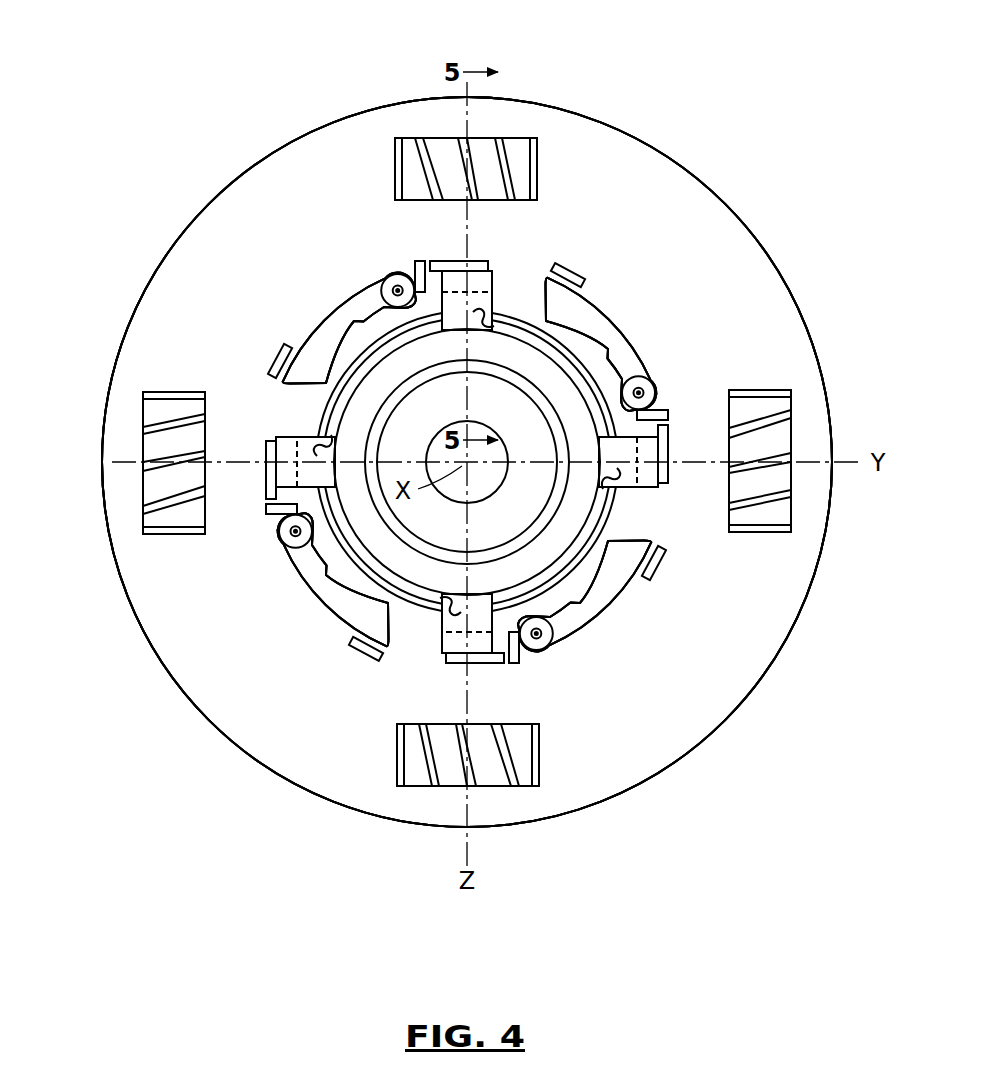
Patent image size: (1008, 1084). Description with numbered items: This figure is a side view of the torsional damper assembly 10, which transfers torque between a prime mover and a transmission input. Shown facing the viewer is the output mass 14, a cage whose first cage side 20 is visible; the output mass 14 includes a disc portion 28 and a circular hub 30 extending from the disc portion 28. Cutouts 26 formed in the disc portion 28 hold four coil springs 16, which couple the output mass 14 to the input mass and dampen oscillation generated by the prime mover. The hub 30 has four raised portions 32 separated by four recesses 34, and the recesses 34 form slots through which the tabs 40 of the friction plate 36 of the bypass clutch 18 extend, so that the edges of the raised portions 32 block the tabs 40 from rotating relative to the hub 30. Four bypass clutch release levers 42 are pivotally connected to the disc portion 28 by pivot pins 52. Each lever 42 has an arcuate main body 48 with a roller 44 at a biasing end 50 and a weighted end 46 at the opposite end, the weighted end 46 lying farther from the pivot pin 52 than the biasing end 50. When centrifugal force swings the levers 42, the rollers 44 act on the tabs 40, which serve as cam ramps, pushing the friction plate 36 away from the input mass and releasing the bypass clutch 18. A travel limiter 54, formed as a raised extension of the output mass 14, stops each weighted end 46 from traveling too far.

The torsional damper assembly 10 is at (700, 820).
The output mass 14 is at (176, 749).
The coil springs 16 is at (503, 165).
The bypass clutch 18 is at (485, 680).
The first cage side 20 is at (225, 665).
The cutouts 26 is at (541, 176).
The disc portion 28 is at (700, 697).
The hub 30 is at (410, 613).
The raised portions 32 is at (318, 436).
The recesses 34 is at (295, 447).
The friction plate 36 is at (417, 570).
The tabs 40 is at (478, 262).
The bypass clutch release lever 42 is at (361, 280).
The roller 44 is at (447, 260).
The weighted end 46 is at (308, 372).
The main body 48 is at (383, 306).
The biasing end 50 is at (268, 470).
The pivot pin 52 is at (397, 289).
The travel limiter 54 is at (300, 365).